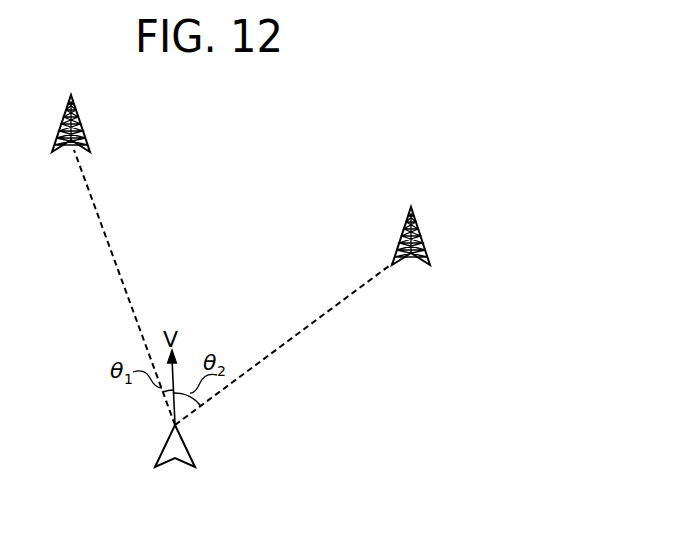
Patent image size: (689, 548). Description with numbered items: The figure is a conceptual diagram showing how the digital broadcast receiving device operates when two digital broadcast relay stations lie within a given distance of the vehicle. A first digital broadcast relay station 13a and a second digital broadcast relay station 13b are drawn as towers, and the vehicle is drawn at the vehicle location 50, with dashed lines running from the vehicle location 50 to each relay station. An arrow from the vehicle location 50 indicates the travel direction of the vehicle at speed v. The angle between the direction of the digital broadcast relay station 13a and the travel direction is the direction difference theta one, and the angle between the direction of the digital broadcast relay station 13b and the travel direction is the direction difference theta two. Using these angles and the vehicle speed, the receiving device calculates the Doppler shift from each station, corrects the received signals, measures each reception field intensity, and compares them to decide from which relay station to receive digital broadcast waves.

The digital broadcast relay station 13a is at (80, 120).
The digital broadcast relay station 13b is at (420, 232).
The vehicle location 50 is at (165, 438).